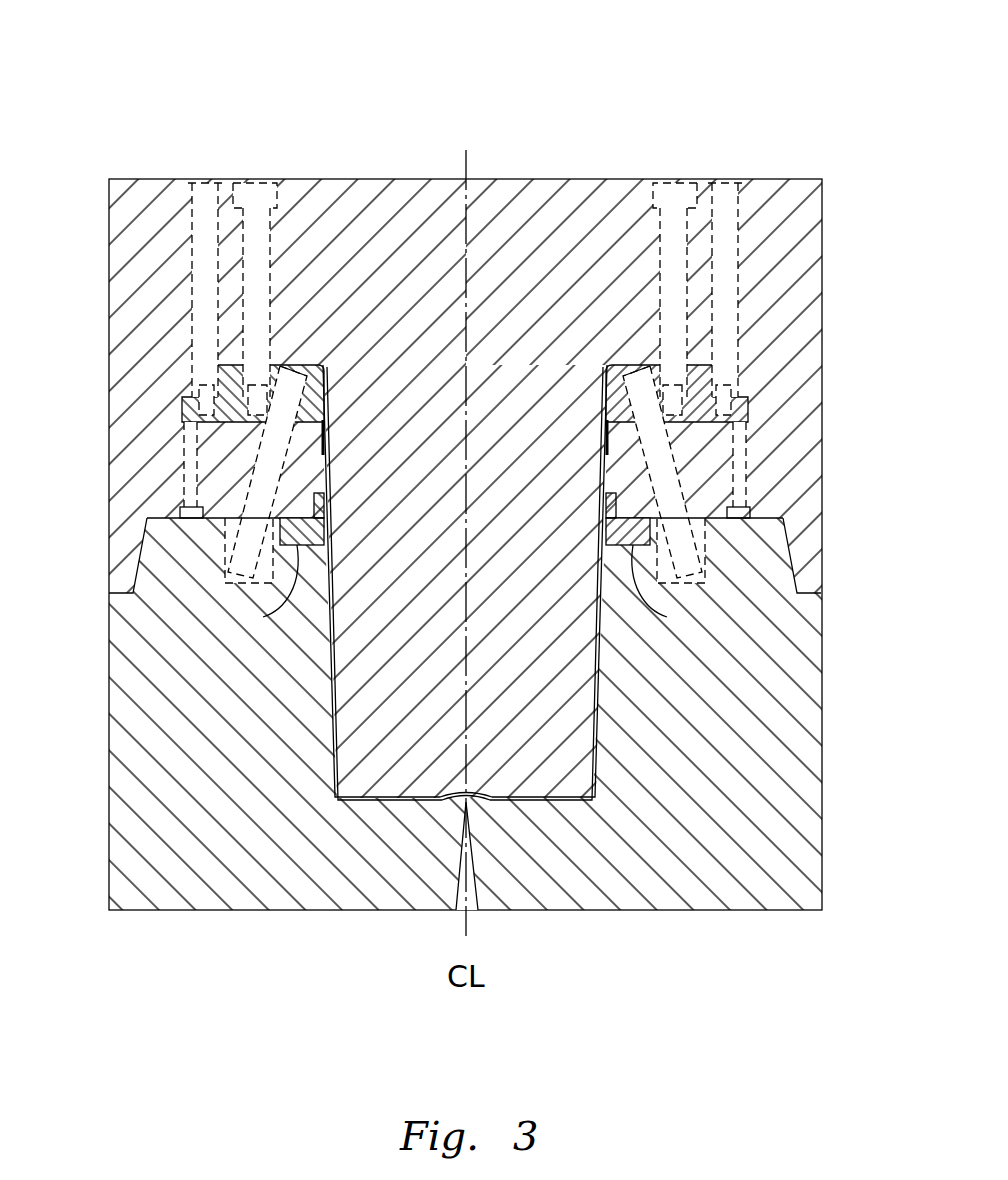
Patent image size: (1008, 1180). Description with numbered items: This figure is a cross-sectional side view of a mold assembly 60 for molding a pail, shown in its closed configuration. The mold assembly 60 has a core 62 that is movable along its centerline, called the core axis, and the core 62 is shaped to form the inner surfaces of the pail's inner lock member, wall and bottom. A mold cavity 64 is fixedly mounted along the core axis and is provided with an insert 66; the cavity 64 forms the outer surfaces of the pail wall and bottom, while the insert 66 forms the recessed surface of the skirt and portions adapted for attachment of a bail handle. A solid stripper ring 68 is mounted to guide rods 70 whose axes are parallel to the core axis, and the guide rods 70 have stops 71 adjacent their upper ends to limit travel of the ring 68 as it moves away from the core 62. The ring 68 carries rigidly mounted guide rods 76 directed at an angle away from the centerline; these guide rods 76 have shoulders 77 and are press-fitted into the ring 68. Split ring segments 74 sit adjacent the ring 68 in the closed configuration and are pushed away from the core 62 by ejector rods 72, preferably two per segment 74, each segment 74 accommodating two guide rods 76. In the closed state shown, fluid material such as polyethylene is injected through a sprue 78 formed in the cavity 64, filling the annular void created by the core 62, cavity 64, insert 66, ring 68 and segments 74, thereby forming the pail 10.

The mold assembly 60 is at (487, 105).
The core 62 is at (372, 179).
The mold cavity 64 is at (645, 911).
The insert 66 is at (263, 617).
The solid stripper ring 68 is at (597, 378).
The guide rods 70 is at (285, 250).
The stops 71 is at (255, 179).
The ejector rods 72 is at (190, 247).
The split ring segments 74 is at (213, 518).
The guide rods 76 is at (257, 473).
The shoulders 77 is at (622, 362).
The sprue 78 is at (458, 868).
The container 10 is at (338, 732).